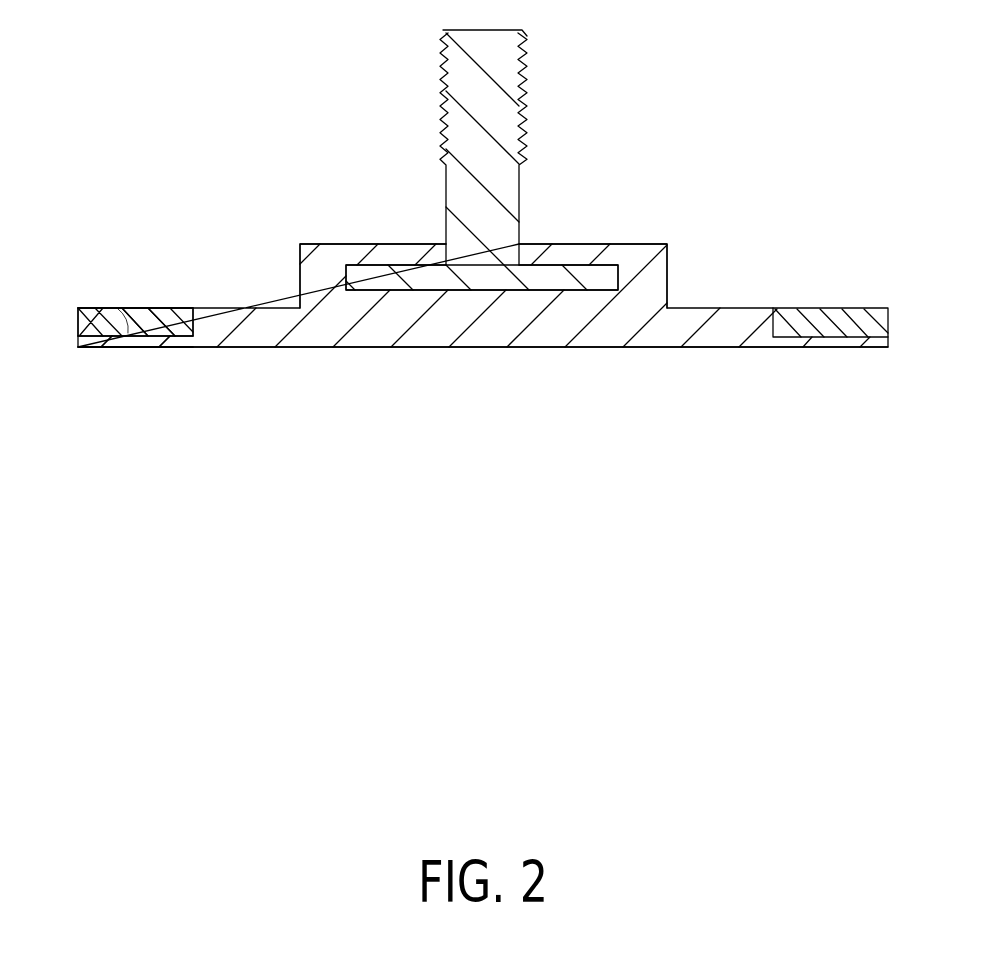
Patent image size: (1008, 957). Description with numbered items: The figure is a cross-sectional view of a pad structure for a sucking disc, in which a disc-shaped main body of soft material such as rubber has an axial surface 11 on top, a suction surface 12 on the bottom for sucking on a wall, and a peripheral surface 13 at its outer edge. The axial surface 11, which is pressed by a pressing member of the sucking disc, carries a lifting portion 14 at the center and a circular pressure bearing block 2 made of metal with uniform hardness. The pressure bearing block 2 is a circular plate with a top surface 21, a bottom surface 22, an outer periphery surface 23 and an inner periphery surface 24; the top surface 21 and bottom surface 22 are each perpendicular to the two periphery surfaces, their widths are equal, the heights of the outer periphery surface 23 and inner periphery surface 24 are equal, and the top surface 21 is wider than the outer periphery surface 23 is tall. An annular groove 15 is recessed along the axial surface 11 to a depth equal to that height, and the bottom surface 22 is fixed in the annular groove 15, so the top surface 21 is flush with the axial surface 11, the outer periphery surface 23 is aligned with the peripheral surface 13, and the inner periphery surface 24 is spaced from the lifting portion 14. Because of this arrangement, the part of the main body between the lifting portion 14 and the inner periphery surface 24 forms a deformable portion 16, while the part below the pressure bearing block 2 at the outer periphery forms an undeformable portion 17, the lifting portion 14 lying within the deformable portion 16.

The pressure bearing block 2 is at (155, 308).
The axial surface 11 is at (267, 308).
The suction surface 12 is at (398, 348).
The peripheral surface 13 is at (78, 342).
The lifting portion 14 is at (522, 85).
The annular groove 15 is at (117, 308).
The deformable portion 16 is at (292, 348).
The undeformable portion 17 is at (127, 347).
The top surface 21 is at (177, 308).
The bottom surface 22 is at (172, 337).
The outer periphery surface 23 is at (78, 317).
The inner periphery surface 24 is at (193, 325).